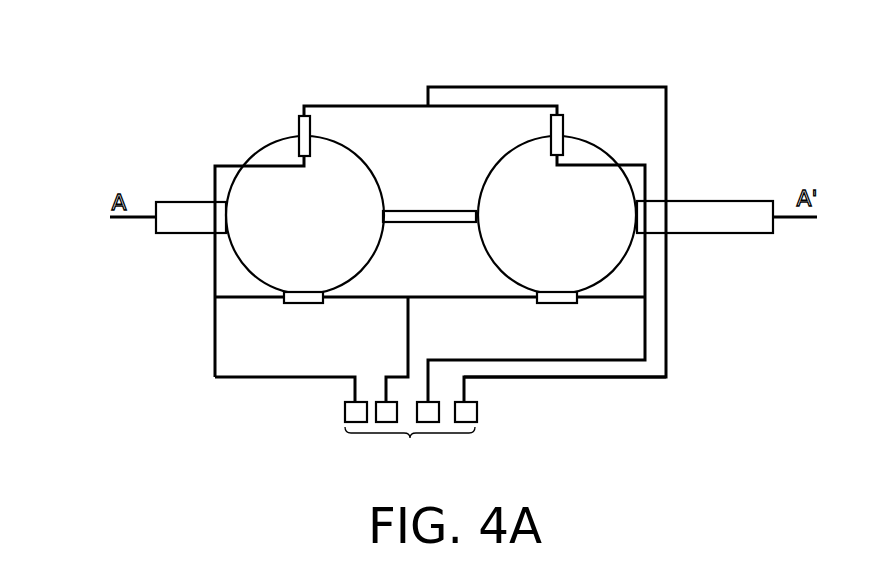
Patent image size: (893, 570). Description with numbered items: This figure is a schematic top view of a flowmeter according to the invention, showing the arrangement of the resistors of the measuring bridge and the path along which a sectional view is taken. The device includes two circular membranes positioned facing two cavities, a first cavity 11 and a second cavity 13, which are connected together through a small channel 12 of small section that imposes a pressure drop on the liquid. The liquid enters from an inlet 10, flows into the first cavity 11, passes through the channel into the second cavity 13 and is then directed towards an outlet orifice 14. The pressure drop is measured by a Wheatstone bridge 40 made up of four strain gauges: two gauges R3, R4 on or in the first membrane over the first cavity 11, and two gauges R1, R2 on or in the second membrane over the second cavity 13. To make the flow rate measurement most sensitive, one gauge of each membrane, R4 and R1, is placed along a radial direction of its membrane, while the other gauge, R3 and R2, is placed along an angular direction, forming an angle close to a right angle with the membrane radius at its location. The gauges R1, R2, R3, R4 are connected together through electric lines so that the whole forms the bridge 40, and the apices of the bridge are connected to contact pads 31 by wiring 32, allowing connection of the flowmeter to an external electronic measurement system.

The Wheatstone bridge 40 is at (362, 80).
The inlet 10 is at (173, 215).
The outlet orifice 14 is at (732, 215).
The connecting optical waveguide 12 is at (428, 218).
The first cavity 11 is at (333, 270).
The second cavity 13 is at (503, 258).
The strain gauge R1 is at (563, 131).
The strain gauge R2 is at (557, 303).
The strain gauge R3 is at (307, 301).
The strain gauge R4 is at (300, 132).
The contact pads 31 is at (411, 433).
The wiring 32 is at (547, 377).